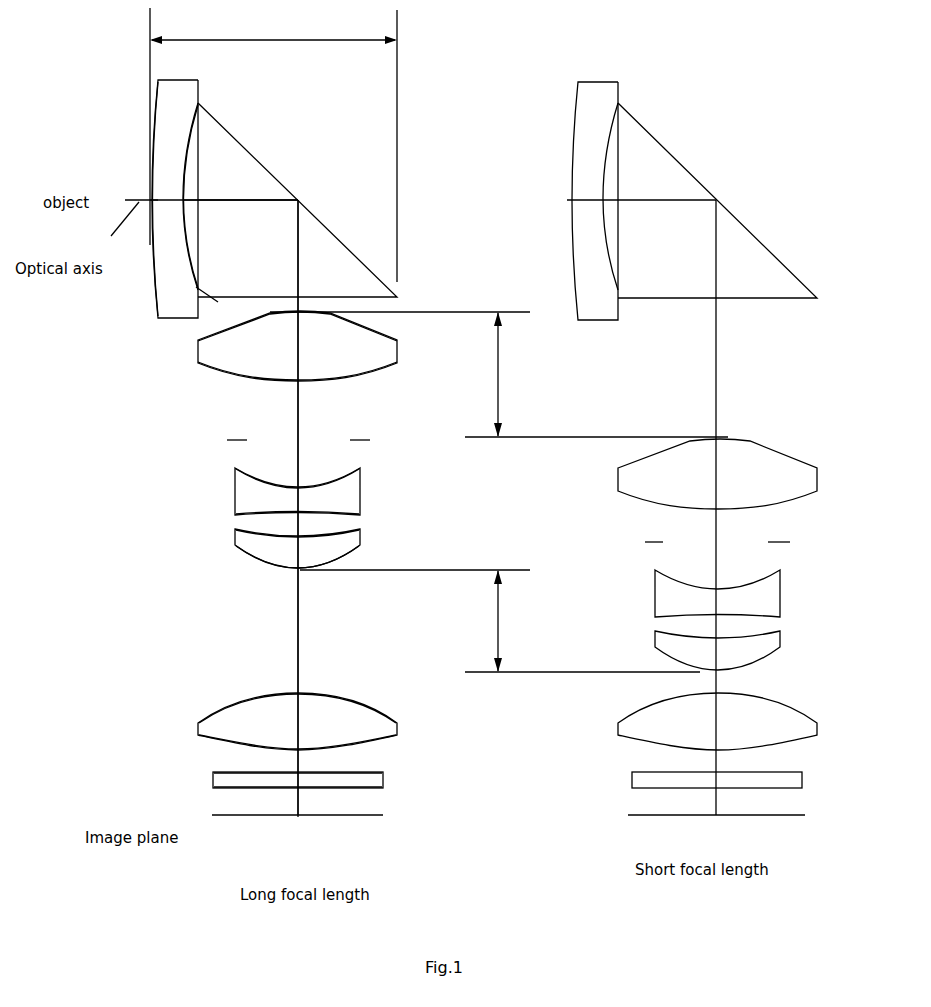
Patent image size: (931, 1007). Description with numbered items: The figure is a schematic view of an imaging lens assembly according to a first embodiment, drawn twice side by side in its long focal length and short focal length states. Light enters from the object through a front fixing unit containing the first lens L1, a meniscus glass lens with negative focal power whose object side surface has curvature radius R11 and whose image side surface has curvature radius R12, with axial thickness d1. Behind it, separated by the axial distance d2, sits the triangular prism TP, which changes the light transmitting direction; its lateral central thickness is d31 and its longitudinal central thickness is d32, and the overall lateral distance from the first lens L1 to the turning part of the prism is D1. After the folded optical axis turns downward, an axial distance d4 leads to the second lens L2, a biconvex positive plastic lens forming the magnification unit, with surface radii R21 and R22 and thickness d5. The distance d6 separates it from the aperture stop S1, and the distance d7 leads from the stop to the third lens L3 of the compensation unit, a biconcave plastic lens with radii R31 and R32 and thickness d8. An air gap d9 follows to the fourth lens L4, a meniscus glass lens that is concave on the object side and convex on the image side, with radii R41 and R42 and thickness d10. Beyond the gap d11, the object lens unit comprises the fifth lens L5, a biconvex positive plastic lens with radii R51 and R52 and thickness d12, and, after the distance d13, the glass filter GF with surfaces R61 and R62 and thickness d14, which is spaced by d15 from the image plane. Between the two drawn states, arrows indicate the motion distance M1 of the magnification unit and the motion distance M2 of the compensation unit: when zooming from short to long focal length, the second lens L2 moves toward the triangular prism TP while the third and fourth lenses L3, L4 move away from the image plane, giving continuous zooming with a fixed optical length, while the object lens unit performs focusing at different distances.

The overall lateral distance D1 is at (273, 25).
The first lens L1 is at (185, 199).
The curvature radius of the object side surface of the first lens R11 is at (157, 97).
The curvature radius of the image side surface of the first lens R12 is at (198, 118).
The triangular prism TP is at (297, 200).
The axial thickness of the first lens d1 is at (160, 191).
The axial distance between the first lens and the triangular prism d2 is at (190, 191).
The lateral central thickness of the triangular prism d31 is at (248, 191).
The longitudinal central thickness of the triangular prism d32 is at (285, 248).
The axial distance between the triangular prism and the second lens d4 is at (288, 304).
The second lens L2 is at (297, 346).
The curvature radius of the object side surface of the second lens R21 is at (230, 319).
The curvature radius of the image side surface of the second lens R22 is at (245, 378).
The axial thickness of the second lens d5 is at (285, 346).
The axial distance between the second lens and the aperture stop d6 is at (288, 410).
The aperture stop S1 is at (284, 442).
The axial distance between the aperture stop and the third lens d7 is at (288, 463).
The third lens L3 is at (297, 491).
The curvature radius of the object side surface of the third lens R31 is at (277, 483).
The curvature radius of the image side surface of the third lens R32 is at (233, 515).
The axial thickness of the third lens d8 is at (288, 500).
The axial distance between the third lens and the fourth lens d9 is at (288, 524).
The fourth lens L4 is at (297, 548).
The curvature radius of the object side surface of the fourth lens R41 is at (265, 531).
The curvature radius of the image side surface of the fourth lens R42 is at (265, 560).
The axial thickness of the fourth lens d10 is at (287, 553).
The axial distance between the fourth lens and the fifth lens d11 is at (285, 631).
The fifth lens L5 is at (297, 721).
The curvature radius of the object side surface of the fifth lens R51 is at (250, 698).
The curvature radius of the image side surface of the fifth lens R52 is at (232, 740).
The axial thickness of the fifth lens d12 is at (287, 721).
The axial distance between the fifth lens and the glass filter d13 is at (284, 762).
The glass filter GF is at (298, 781).
The curvature radius of the object side surface of the glass filter R61 is at (220, 773).
The curvature radius of the image side surface of the glass filter R62 is at (228, 788).
The axial thickness of the glass filter d14 is at (280, 781).
The axial distance between the glass filter and the image plane d15 is at (282, 801).
The motion distance of the magnification unit M1 is at (482, 374).
The motion distance of the compensation unit M2 is at (482, 621).